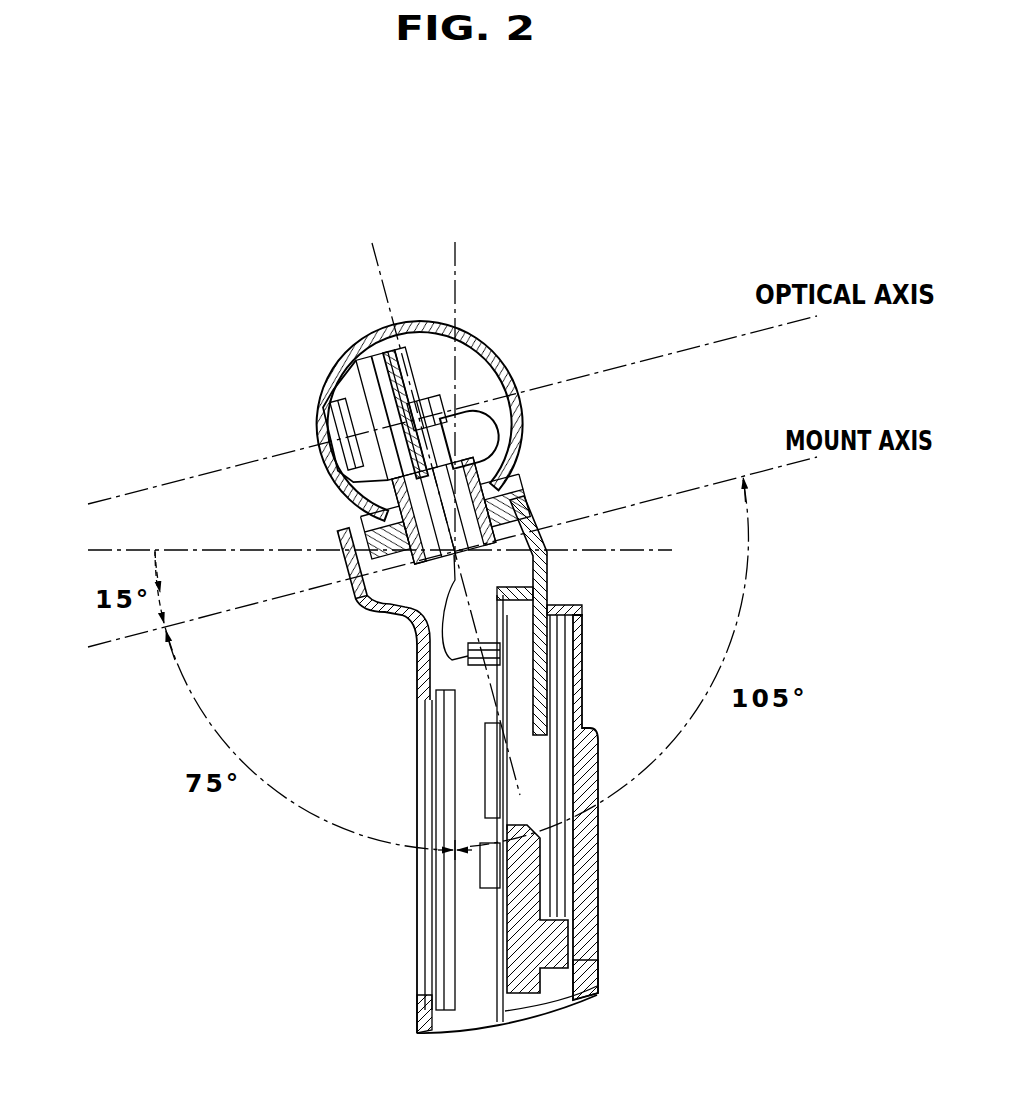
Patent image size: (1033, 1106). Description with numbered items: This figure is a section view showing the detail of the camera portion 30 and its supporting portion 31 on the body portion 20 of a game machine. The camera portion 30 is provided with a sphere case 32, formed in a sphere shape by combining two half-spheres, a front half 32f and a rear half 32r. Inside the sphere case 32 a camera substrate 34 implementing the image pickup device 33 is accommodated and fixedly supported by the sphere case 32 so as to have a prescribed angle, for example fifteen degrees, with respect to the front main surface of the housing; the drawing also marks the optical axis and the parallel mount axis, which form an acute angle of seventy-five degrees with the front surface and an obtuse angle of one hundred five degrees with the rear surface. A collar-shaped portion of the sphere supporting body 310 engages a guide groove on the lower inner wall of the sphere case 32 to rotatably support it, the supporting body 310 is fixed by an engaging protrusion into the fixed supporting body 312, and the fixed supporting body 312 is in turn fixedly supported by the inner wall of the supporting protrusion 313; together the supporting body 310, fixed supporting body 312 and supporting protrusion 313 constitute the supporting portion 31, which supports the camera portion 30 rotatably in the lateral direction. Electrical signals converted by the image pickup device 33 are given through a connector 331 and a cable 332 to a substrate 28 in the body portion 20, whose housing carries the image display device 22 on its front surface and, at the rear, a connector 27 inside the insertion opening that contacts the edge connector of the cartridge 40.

The camera portion 30 is at (495, 187).
The sphere case 32 is at (445, 192).
The front half 32f is at (356, 340).
The rear half 32r is at (420, 332).
The image pickup device 33 is at (355, 402).
The camera substrate 34 is at (405, 385).
The connector 331 is at (432, 408).
The cable 332 is at (482, 402).
The supporting portion 31 is at (645, 478).
The sphere supporting body 310 is at (528, 475).
The fixed supporting body 312 is at (512, 512).
The supporting protrusion 313 is at (535, 548).
The body portion 20 is at (410, 758).
The image display device 22 is at (440, 965).
The cartridge 40 is at (585, 697).
The connector 27 is at (540, 945).
The substrate 28 is at (578, 986).